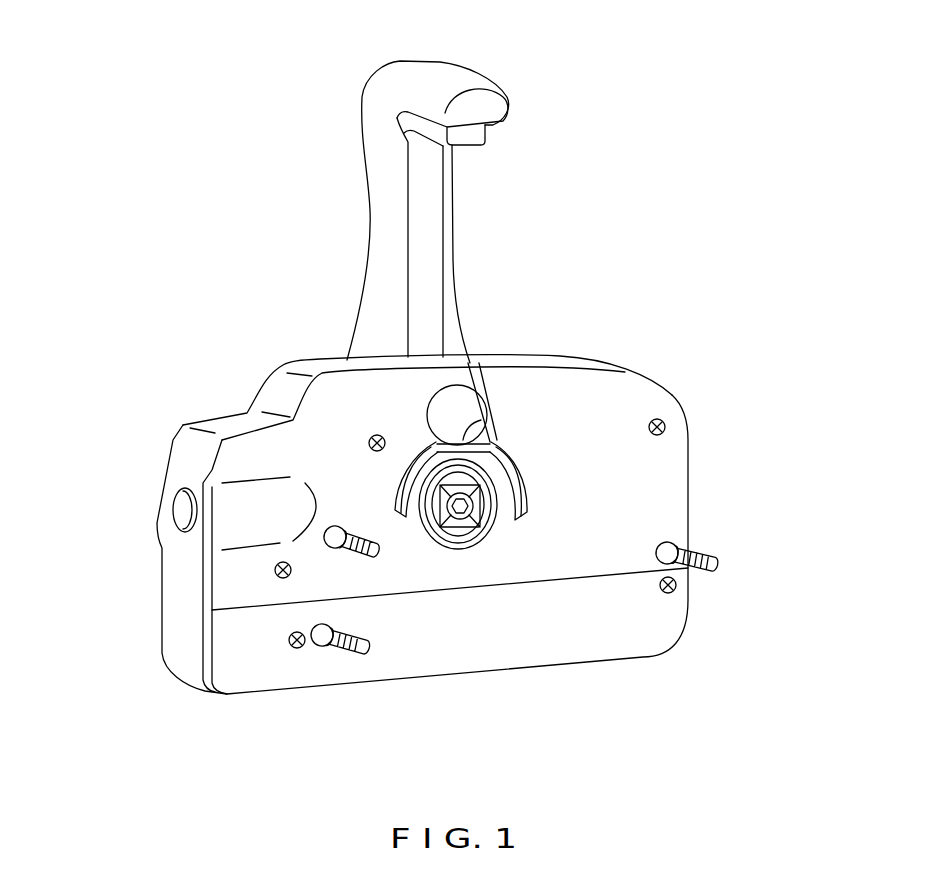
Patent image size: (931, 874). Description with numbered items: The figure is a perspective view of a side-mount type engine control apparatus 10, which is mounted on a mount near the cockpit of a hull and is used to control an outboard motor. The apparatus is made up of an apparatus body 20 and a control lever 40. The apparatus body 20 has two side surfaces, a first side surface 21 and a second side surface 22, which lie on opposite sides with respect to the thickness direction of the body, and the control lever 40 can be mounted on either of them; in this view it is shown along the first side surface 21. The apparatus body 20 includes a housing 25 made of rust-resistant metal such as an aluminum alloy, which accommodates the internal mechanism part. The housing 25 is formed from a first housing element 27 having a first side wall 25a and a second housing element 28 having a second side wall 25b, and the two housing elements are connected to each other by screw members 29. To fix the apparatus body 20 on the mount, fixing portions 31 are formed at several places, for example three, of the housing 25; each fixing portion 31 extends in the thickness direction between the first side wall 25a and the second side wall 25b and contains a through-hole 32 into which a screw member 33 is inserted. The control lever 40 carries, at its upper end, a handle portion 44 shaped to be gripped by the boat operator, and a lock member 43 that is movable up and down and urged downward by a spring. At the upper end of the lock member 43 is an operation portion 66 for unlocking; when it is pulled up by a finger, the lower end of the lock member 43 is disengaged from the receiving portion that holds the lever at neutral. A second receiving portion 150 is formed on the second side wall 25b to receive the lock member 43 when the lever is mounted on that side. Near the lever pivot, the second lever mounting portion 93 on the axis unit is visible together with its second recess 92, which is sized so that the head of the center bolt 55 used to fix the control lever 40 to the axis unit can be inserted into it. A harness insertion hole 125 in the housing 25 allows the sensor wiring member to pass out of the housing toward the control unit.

The side-mount type engine control apparatus 10 is at (718, 240).
The apparatus body 20 is at (229, 402).
The first side surface 21 is at (495, 360).
The second side surface 22 is at (622, 492).
The housing 25 is at (692, 447).
The first side wall 25a is at (314, 360).
The second side wall 25b is at (587, 430).
The first housing element 27 is at (175, 597).
The second housing element 28 is at (540, 563).
The screw member 29 is at (369, 443).
The fixing portion 31 is at (670, 538).
The through-hole 32 is at (680, 543).
The screw member 33 is at (722, 568).
The control lever 40 is at (366, 206).
The lock member 43 is at (430, 252).
The handle portion 44 is at (455, 73).
The center bolt 55 is at (468, 527).
The operation portion 66 is at (470, 138).
The second recess 92 is at (490, 503).
The second lever mounting portion 93 is at (473, 505).
The harness insertion hole 125 is at (185, 512).
The second receiving portion 150 is at (473, 428).